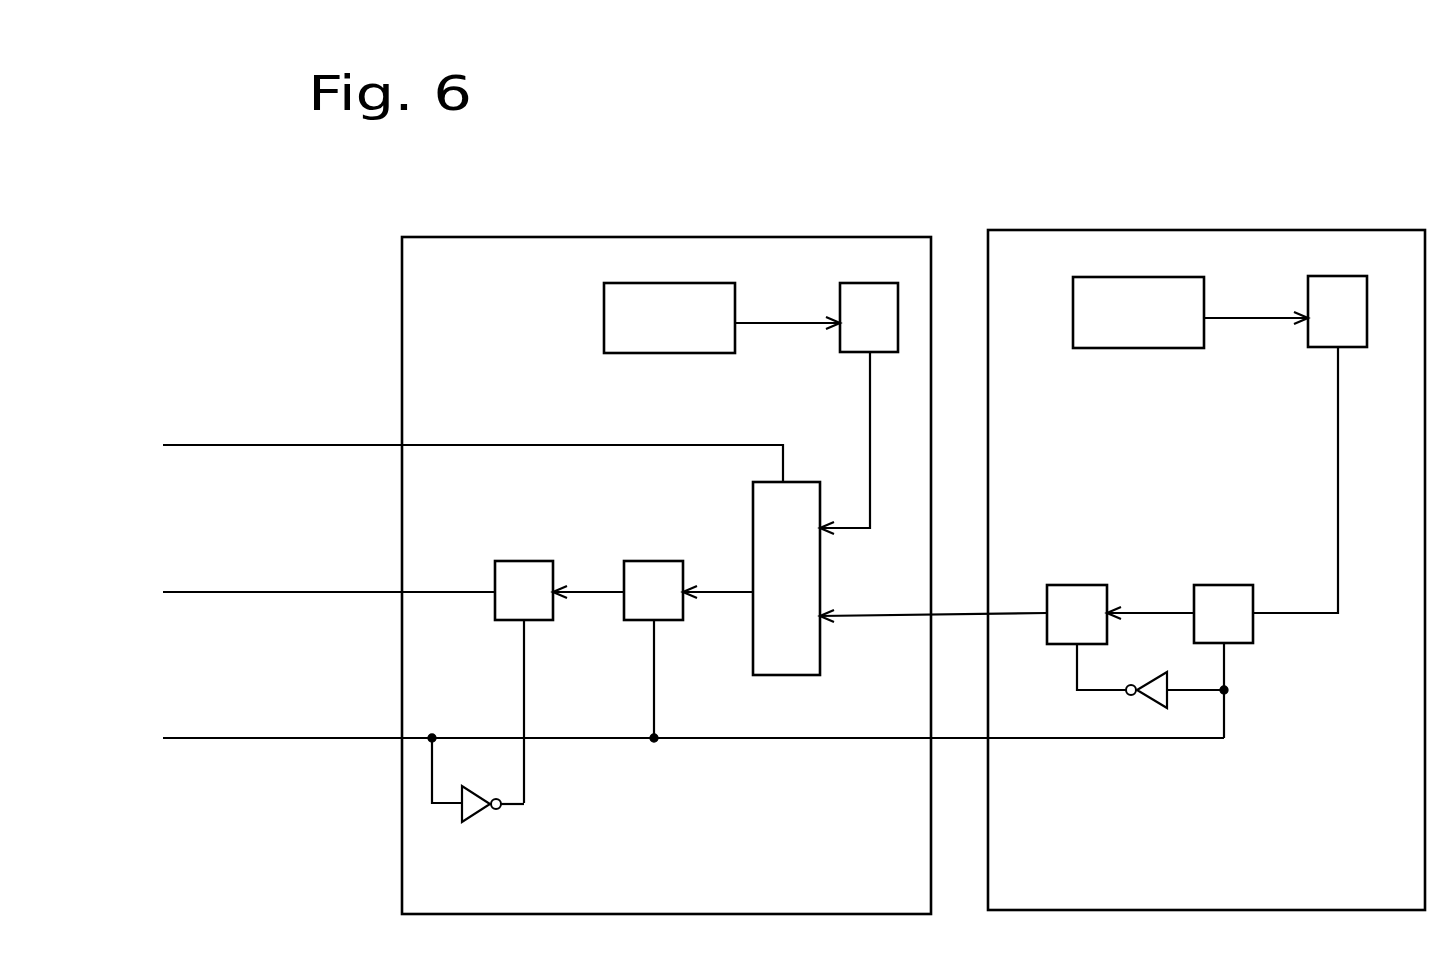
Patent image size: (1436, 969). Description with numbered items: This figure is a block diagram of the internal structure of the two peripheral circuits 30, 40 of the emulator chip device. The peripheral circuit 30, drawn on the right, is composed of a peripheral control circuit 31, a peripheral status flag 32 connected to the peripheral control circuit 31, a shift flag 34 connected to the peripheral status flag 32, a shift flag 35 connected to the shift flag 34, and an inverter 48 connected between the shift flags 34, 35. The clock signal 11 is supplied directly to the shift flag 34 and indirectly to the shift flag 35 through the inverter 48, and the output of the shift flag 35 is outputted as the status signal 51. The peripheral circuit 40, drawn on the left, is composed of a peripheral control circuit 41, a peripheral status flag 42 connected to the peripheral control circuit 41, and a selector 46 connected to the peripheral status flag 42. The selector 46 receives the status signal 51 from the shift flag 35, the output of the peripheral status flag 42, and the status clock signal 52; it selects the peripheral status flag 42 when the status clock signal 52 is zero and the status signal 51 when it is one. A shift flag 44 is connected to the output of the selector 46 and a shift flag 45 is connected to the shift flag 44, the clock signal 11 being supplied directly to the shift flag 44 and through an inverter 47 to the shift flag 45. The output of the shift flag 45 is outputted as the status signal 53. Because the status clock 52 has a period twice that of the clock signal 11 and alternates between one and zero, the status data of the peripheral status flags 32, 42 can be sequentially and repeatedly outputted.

The peripheral circuit 40 is at (628, 237).
The peripheral circuit 30 is at (1172, 230).
The peripheral control circuit 41 is at (656, 354).
The peripheral status flag 42 is at (852, 353).
The peripheral control circuit 31 is at (1134, 350).
The peripheral status flag 32 is at (1318, 348).
The selector 46 is at (820, 573).
The shift flag 44 is at (654, 560).
The shift flag 45 is at (525, 560).
The inverter 47 is at (470, 823).
The status signal 51 is at (938, 614).
The shift flag 35 is at (1076, 584).
The shift flag 34 is at (1224, 584).
The inverter 48 is at (1140, 673).
The status clock signal 52 is at (186, 445).
The status signal 53 is at (186, 592).
The clock signal 11 is at (189, 738).